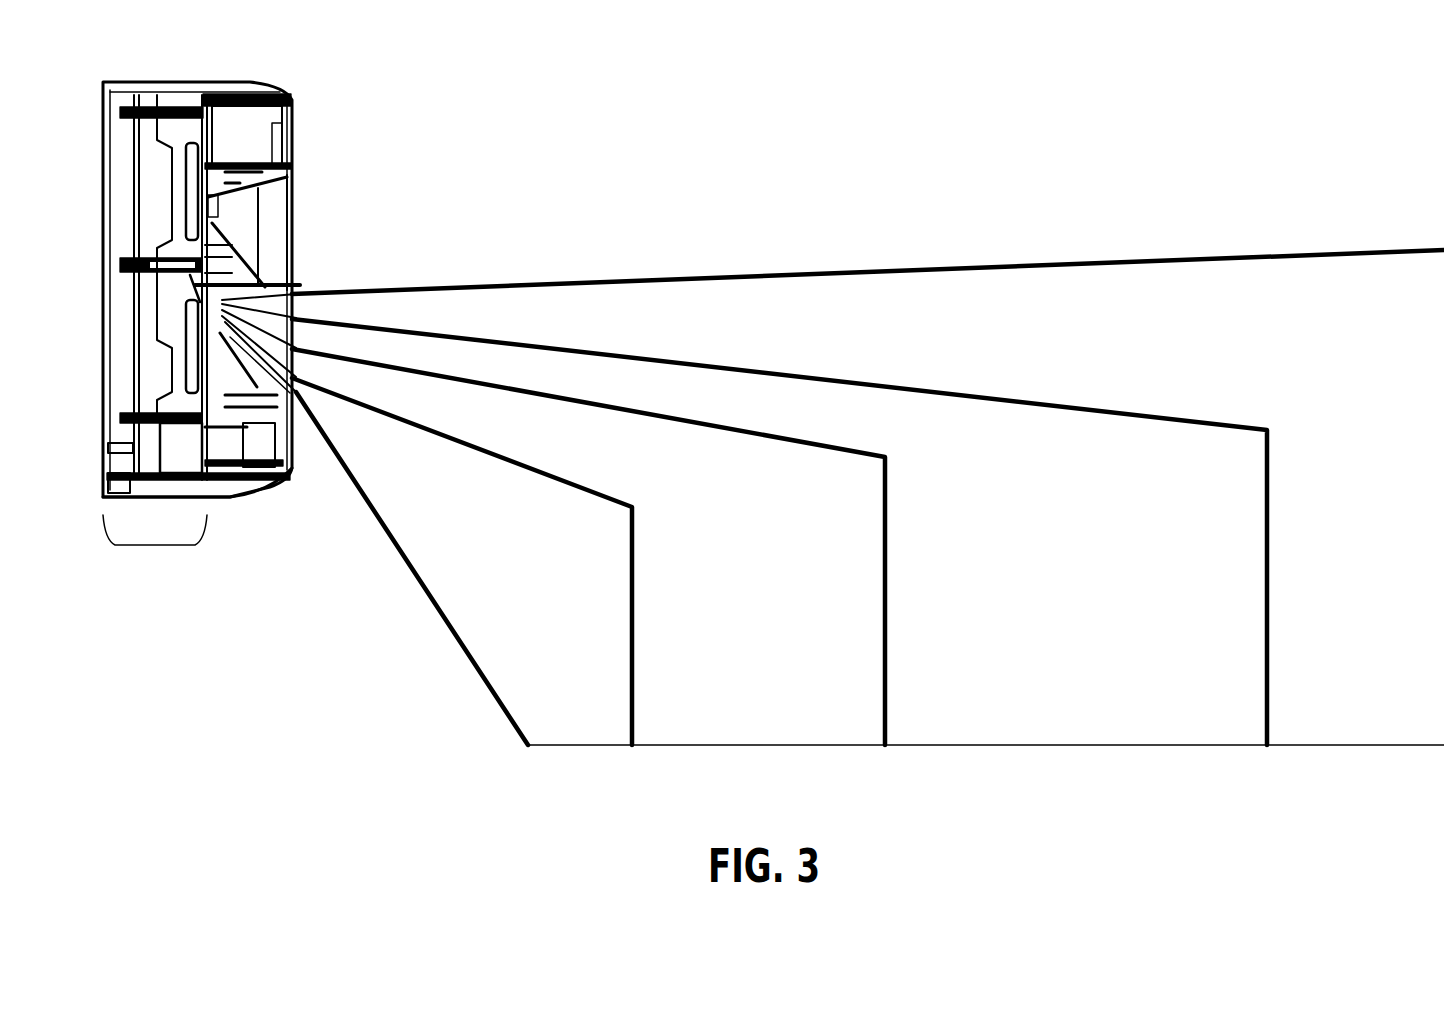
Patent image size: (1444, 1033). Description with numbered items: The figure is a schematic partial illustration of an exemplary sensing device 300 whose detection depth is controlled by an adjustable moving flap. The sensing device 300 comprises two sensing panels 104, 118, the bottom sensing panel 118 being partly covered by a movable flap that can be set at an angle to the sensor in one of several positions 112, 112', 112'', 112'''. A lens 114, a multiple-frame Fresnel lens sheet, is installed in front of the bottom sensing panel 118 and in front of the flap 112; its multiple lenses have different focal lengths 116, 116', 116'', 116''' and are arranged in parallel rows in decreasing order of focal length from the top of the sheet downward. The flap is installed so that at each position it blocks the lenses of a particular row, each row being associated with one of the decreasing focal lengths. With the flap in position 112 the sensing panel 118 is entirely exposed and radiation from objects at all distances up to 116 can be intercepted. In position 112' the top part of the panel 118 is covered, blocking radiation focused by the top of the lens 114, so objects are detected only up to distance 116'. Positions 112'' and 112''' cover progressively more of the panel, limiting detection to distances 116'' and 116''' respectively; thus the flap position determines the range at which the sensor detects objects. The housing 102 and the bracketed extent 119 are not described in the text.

The sensing device 300 is at (220, 62).
The housing 102 is at (296, 127).
The sensing panel 104 is at (290, 223).
The flap position 112 is at (317, 259).
The flap position 112' is at (341, 283).
The flap position 112'' is at (328, 336).
The flap position 112''' is at (325, 359).
The lens 114 is at (297, 308).
The focal length 116 is at (868, 255).
The focal length 116' is at (779, 532).
The focal length 116'' is at (636, 547).
The focal length 116''' is at (516, 561).
The sensing panel 118 is at (298, 392).
The assembly width 119 is at (154, 545).